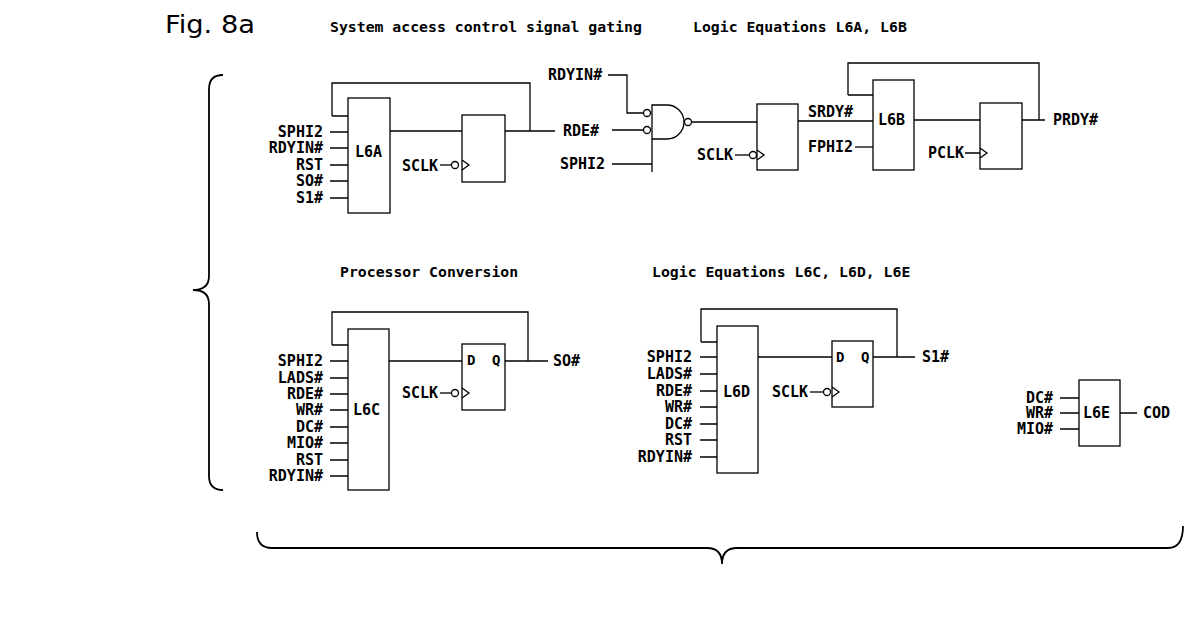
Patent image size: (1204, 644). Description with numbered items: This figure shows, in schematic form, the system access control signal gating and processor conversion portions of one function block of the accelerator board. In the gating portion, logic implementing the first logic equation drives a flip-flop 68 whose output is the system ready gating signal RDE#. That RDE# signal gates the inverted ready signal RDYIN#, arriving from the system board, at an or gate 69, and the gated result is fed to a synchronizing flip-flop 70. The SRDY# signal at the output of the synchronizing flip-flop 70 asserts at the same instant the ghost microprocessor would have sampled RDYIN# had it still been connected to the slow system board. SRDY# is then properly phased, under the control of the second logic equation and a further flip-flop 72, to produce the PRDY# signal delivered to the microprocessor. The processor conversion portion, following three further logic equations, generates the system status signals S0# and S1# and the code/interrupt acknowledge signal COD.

The flip-flop 68 is at (479, 148).
The or gate 69 is at (668, 139).
The synchronizing flip-flop 70 is at (774, 137).
The flip-flop 72 is at (1001, 136).